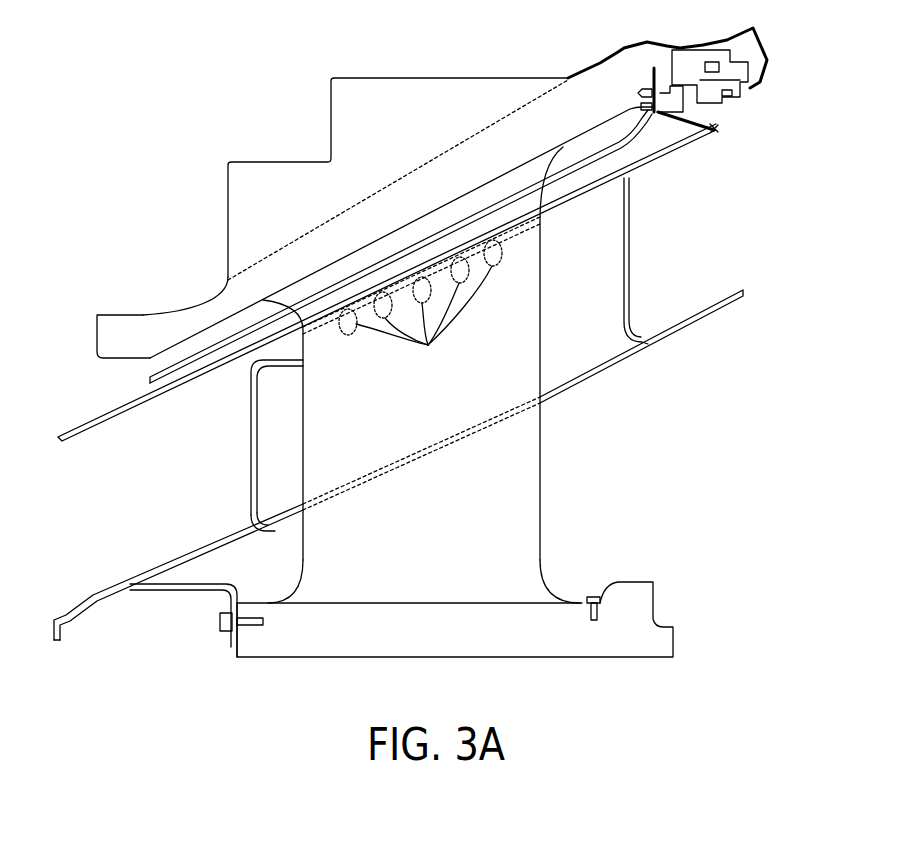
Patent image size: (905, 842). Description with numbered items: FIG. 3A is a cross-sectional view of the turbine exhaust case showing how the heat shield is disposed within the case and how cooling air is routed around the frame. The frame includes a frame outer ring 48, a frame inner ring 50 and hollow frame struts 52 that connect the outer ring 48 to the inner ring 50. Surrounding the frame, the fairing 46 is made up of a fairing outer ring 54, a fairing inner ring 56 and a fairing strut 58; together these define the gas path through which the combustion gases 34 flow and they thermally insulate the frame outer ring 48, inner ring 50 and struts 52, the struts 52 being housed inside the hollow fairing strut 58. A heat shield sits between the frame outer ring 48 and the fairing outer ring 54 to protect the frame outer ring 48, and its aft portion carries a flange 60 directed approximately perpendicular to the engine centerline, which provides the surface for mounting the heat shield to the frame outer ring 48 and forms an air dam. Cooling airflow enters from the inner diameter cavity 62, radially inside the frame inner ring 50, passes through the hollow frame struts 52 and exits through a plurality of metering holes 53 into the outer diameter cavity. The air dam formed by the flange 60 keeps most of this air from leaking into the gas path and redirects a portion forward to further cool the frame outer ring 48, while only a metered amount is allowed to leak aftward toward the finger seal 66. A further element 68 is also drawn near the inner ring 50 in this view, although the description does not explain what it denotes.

The combustion gases 34 is at (697, 227).
The fairing 46 is at (66, 410).
The frame outer ring 48 is at (126, 330).
The frame inner ring 50 is at (336, 650).
The frame struts 52 is at (538, 493).
The metering holes 53 is at (421, 296).
The fairing outer ring 54 is at (697, 148).
The fairing inner ring 56 is at (660, 337).
The fairing strut 58 is at (253, 443).
The flange 60 is at (657, 117).
The inner diameter cavity 62 is at (263, 421).
The finger seal 66 is at (722, 109).
The bolt 68 is at (583, 611).